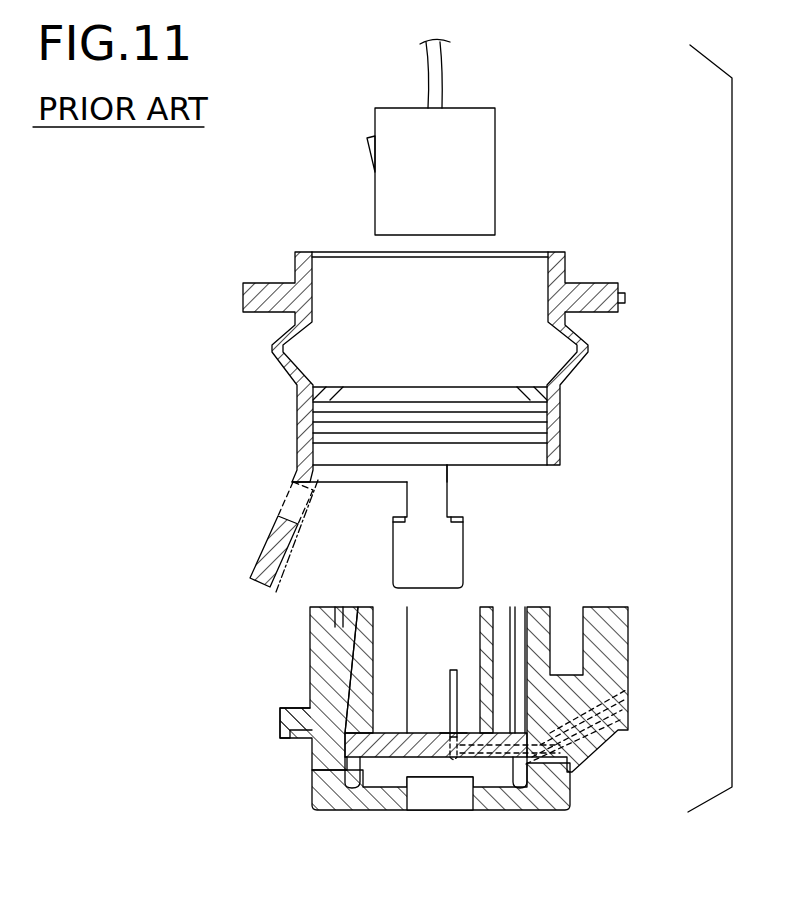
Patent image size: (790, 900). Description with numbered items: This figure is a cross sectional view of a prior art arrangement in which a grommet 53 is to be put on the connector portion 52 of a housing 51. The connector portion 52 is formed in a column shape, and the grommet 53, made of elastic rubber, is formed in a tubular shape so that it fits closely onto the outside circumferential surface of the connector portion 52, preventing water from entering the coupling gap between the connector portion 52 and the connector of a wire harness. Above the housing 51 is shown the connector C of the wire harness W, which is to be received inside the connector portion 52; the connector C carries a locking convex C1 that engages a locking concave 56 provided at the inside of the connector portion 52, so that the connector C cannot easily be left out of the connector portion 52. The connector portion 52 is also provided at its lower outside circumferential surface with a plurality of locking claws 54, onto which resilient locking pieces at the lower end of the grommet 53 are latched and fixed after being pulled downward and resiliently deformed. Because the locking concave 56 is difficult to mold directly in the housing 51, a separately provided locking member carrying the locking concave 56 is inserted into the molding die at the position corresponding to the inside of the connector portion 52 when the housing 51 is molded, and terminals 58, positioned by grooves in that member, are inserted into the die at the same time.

The housing 51 is at (628, 638).
The connector portion 52 is at (318, 787).
The grommet 53 is at (602, 282).
The locking claw 54 is at (280, 720).
The locking concave 56 is at (365, 640).
The terminal 58 is at (453, 670).
The connector C is at (497, 163).
The locking convex C1 is at (368, 140).
The wire harness W is at (443, 62).